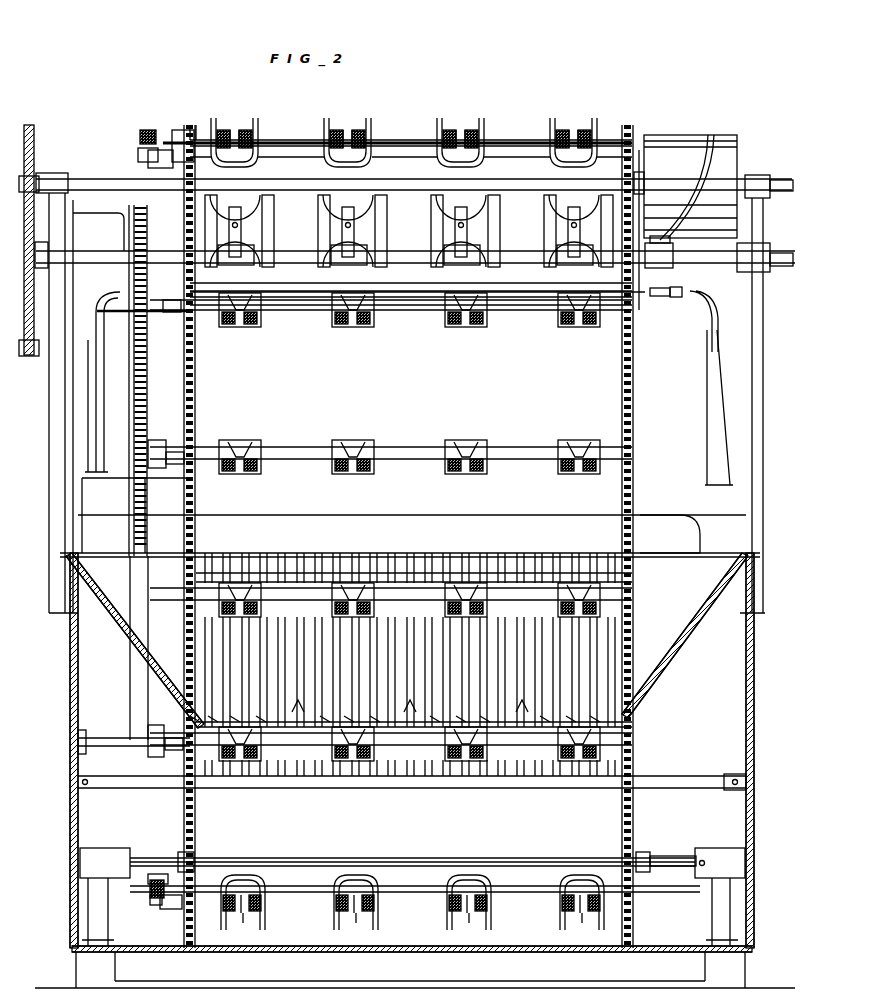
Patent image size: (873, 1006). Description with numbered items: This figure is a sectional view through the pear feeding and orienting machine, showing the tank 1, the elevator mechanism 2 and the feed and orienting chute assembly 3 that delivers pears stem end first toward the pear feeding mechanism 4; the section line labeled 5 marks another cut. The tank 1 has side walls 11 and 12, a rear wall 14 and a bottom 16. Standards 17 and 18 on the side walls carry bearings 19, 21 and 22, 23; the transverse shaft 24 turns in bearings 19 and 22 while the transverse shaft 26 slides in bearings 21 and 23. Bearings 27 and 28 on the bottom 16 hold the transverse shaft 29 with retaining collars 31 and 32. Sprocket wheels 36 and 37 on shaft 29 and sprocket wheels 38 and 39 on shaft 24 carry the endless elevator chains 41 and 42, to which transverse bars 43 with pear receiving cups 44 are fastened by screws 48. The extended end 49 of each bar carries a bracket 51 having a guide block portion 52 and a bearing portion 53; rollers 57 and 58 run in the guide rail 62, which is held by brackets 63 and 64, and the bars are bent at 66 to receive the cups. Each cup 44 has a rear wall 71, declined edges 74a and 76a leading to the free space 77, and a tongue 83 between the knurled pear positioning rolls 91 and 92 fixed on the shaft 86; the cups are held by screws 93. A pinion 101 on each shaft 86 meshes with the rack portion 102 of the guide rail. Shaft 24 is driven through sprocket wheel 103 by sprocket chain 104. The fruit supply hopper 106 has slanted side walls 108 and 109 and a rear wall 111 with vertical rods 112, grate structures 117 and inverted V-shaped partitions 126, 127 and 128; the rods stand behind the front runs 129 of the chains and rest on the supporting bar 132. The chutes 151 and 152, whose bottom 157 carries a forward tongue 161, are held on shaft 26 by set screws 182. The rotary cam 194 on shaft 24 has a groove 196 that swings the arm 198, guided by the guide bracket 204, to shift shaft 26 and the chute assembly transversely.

The tank 1 is at (756, 692).
The elevator mechanism 2 is at (476, 105).
The feed and orienting chute assembly 3 is at (508, 322).
The pear feeding mechanism 4 is at (700, 320).
The section line 5 is at (250, 96).
The side wall 11 is at (70, 680).
The side wall 12 is at (754, 752).
The rear wall 14 is at (639, 95).
The bottom 16 is at (470, 950).
The standard 17 is at (49, 448).
The standard 18 is at (752, 385).
The bearing 19 is at (62, 173).
The bearing 21 is at (85, 250).
The bearing 22 is at (762, 172).
The bearing 23 is at (768, 243).
The transverse shaft 24 is at (115, 177).
The transverse shaft 26 is at (115, 262).
The bearing 27 is at (100, 848).
The bearing 28 is at (715, 848).
The transverse shaft 29 is at (395, 858).
The retaining collar 31 is at (140, 848).
The retaining collar 32 is at (695, 848).
The sprocket wheel 36 is at (185, 852).
The sprocket wheel 37 is at (640, 858).
The sprocket wheel 38 is at (180, 130).
The sprocket wheel 39 is at (640, 150).
The endless elevator chain 41 is at (196, 496).
The endless elevator chain 42 is at (622, 490).
The transverse bar 43 is at (415, 165).
The pear receiving and orienting cup 44 is at (360, 125).
The screw 48 is at (190, 150).
The extended end of transverse bar 49 is at (148, 130).
The bracket 51 is at (170, 135).
The guide block portion 52 is at (140, 152).
The bearing portion 53 is at (170, 338).
The roller 57 is at (148, 898).
The roller 58 is at (145, 160).
The guide rail 62 is at (133, 352).
The bracket 63 is at (115, 742).
The bracket 64 is at (120, 202).
The bent portion of transverse bar 66 is at (282, 140).
The rear wall 71 is at (258, 305).
The continuous edge 74a is at (444, 445).
The continuous edge 76a is at (375, 445).
The free space 77 is at (232, 125).
The tongue 83 is at (480, 135).
The shaft 86 is at (300, 140).
The pear positioning roll 91 is at (232, 470).
The pear positioning roll 92 is at (258, 328).
The screw 93 is at (240, 440).
The pinion 101 is at (140, 138).
The rack portion 102 is at (136, 502).
The sprocket wheel 103 is at (52, 113).
The sprocket chain 104 is at (36, 345).
The fruit supply hopper 106 is at (128, 640).
The side wall 108 is at (148, 655).
The side wall 109 is at (700, 640).
The rear wall 111 is at (118, 556).
The vertical rod 112 is at (266, 556).
The semi-circular grate structure 117 is at (212, 725).
The partition 126 is at (290, 710).
The partition 127 is at (402, 710).
The partition 128 is at (514, 710).
The front run 129 is at (186, 535).
The supporting bar 132 is at (680, 770).
The chute 151 is at (592, 228).
The chute 152 is at (432, 275).
The bottom portion 157 is at (380, 190).
The tongue 161 is at (340, 210).
The set screw 182 is at (360, 295).
The rotary cam 194 is at (690, 186).
The groove 196 is at (712, 138).
The arm 198 is at (678, 270).
The guide bracket 204 is at (712, 270).